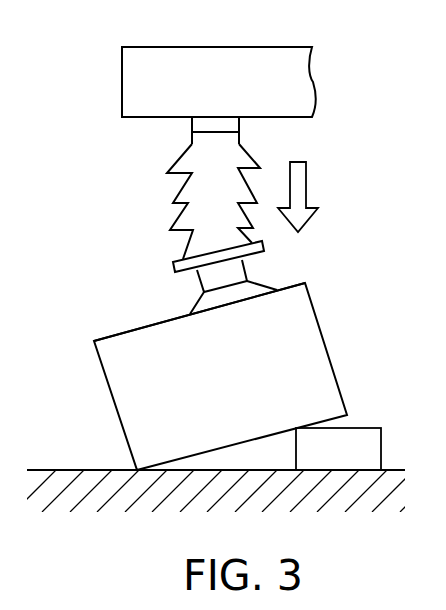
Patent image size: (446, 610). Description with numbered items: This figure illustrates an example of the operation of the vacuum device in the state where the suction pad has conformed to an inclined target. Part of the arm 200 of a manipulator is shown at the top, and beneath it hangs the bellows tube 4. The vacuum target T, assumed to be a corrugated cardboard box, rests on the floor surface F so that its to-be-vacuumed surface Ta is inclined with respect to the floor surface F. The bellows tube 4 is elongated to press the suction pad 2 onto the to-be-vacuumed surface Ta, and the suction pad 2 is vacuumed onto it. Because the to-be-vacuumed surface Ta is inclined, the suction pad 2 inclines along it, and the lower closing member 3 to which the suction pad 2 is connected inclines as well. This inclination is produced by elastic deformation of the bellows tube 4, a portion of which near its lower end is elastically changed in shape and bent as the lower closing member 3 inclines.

The arm 200 is at (218, 47).
The bellows tube 4 is at (189, 157).
The lower closing member 3 is at (172, 268).
The suction pad 2 is at (205, 300).
The vacuum target T is at (120, 398).
The to-be-vacuumed surface Ta is at (118, 336).
The floor surface F is at (53, 470).